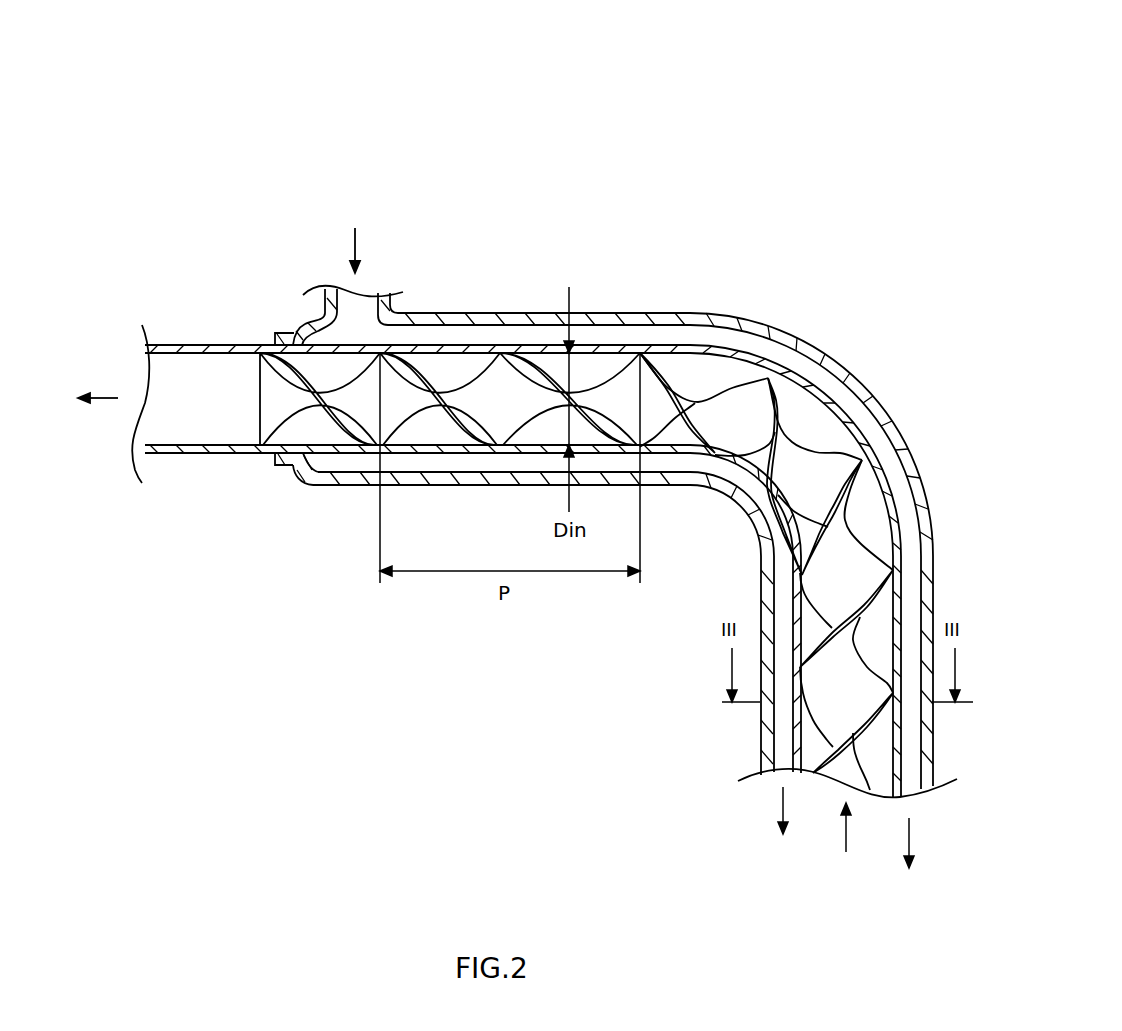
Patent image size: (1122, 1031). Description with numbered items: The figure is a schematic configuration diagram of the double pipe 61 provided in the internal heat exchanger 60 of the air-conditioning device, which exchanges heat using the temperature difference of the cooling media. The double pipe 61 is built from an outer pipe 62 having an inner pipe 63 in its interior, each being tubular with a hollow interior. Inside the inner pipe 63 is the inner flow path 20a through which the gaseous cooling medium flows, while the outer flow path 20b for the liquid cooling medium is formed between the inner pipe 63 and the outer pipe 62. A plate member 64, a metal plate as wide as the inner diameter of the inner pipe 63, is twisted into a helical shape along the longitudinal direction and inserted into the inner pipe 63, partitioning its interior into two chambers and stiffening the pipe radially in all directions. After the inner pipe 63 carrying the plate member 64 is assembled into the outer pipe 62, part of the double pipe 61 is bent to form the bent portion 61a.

The internal heat exchanger 60 is at (736, 82).
The double pipe 61 is at (758, 184).
The bent portion 61a is at (841, 328).
The outer pipe 62 is at (458, 313).
The inner pipe 63 is at (313, 486).
The plate member 64 is at (674, 345).
The inner flow path 20a is at (216, 411).
The outer flow path 20b is at (376, 338).